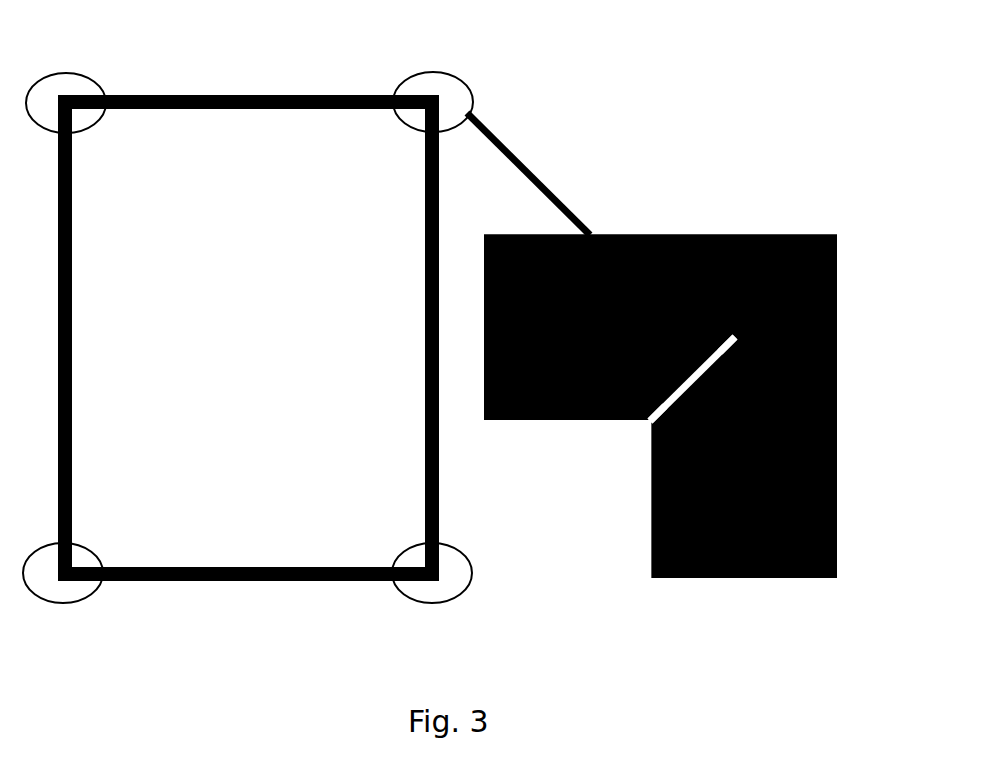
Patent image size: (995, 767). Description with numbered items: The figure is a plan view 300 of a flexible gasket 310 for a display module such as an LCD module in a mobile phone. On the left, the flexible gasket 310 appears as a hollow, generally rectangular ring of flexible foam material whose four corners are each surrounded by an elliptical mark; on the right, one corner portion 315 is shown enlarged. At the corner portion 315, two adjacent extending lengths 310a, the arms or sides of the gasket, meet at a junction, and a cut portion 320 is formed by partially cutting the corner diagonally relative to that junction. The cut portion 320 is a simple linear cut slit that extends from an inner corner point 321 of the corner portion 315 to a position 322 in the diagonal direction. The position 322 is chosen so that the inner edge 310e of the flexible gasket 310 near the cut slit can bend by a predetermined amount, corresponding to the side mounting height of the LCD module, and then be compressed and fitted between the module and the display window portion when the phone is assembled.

The plan view 300 is at (468, 303).
The flexible gasket 310 is at (439, 455).
The extending lengths 310a is at (362, 95).
The inner edge 310e is at (425, 295).
The corner portion 315 is at (470, 90).
The cut portion 320 is at (699, 379).
The inner corner point 321 is at (553, 475).
The position 322 is at (750, 328).